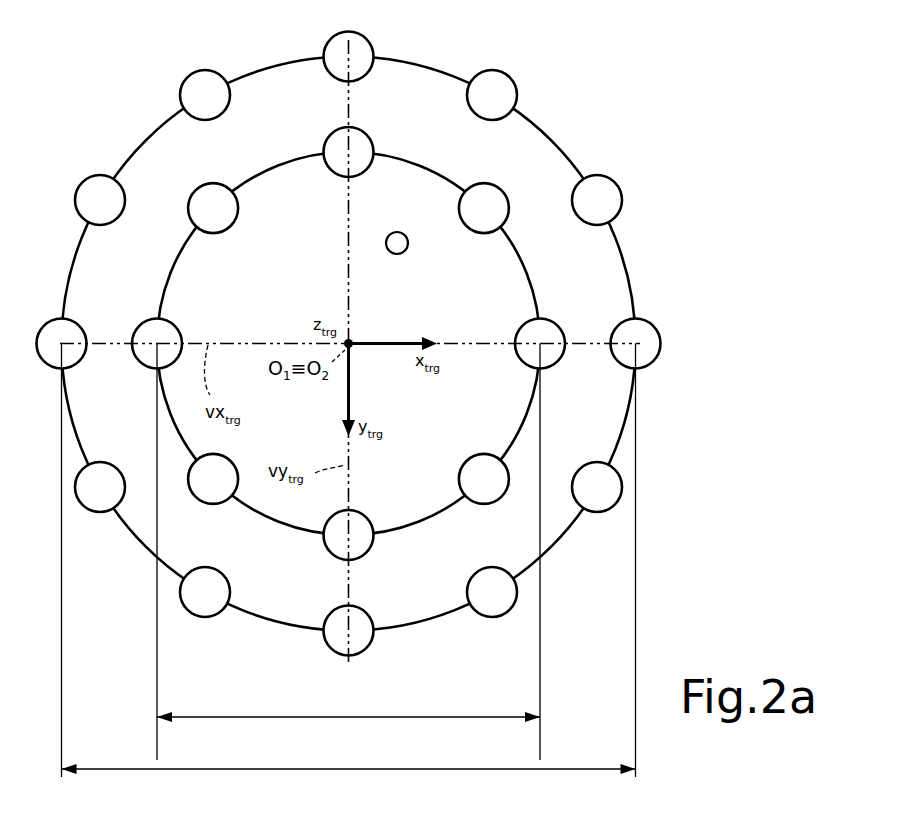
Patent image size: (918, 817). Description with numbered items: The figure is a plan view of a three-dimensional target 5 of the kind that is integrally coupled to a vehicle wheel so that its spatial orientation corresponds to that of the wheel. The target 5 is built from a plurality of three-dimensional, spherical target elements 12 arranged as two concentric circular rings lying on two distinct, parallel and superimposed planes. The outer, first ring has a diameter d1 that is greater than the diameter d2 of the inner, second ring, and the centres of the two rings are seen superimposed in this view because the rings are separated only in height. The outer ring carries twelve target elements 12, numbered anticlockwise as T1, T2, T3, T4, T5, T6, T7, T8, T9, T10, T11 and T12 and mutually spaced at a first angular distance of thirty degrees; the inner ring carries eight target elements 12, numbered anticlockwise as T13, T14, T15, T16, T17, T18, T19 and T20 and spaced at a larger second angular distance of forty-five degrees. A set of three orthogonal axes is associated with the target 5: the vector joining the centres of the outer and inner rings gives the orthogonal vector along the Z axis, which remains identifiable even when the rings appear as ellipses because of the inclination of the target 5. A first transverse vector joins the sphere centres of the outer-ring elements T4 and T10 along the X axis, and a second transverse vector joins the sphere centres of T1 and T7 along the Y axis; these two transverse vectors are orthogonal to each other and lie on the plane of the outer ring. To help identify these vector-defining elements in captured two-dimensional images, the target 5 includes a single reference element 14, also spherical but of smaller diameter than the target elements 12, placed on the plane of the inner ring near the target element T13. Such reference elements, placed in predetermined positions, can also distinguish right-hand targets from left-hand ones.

The target 5 is at (658, 154).
The target element 12 is at (349, 340).
The reference element 14 is at (398, 255).
The target element T1 is at (352, 45).
The target element T2 is at (205, 83).
The target element T3 is at (95, 189).
The target element T4 is at (53, 334).
The target element T5 is at (100, 500).
The target element T6 is at (205, 604).
The target element T7 is at (353, 641).
The target element T8 is at (492, 604).
The target element T9 is at (597, 499).
The target element T10 is at (645, 331).
The target element T11 is at (598, 187).
The target element T12 is at (500, 83).
The target element T13 is at (332, 146).
The target element T14 is at (215, 196).
The target element T15 is at (149, 333).
The target element T16 is at (213, 492).
The target element T17 is at (367, 538).
The target element T18 is at (488, 492).
The target element T19 is at (548, 331).
The target element T20 is at (484, 198).
The diameter of outer ring d1 is at (349, 758).
The diameter of inner ring d2 is at (348, 707).